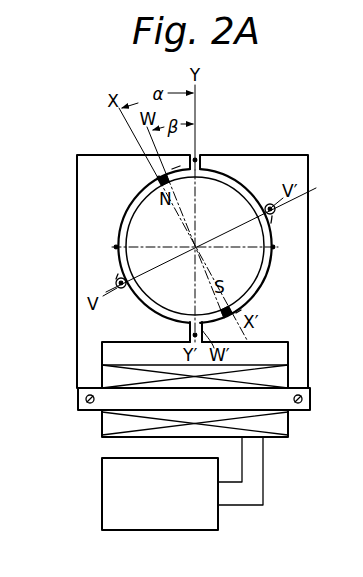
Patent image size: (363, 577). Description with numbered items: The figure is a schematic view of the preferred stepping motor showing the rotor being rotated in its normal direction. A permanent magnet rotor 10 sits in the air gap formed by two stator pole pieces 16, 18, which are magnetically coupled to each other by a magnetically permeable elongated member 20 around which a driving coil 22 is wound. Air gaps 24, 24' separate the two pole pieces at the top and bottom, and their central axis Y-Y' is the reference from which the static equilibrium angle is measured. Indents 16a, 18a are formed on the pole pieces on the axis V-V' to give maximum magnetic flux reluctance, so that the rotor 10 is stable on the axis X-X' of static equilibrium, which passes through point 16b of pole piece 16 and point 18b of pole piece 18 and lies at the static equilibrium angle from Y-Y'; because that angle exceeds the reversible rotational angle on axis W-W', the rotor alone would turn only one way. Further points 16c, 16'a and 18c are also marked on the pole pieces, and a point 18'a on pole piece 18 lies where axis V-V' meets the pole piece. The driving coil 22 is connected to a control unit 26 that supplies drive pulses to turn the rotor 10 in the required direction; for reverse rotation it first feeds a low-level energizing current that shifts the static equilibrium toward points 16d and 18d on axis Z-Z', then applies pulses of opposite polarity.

The permanent magnet rotor 10 is at (268, 266).
The stator pole piece 16 is at (139, 259).
The indent 16a is at (116, 288).
The stator ring portion 16'a is at (75, 264).
The static equilibrium point 16b is at (158, 178).
The stator ring portion 16c is at (172, 168).
The electromagnetically provided static equilibrium point 16d is at (115, 247).
The stator pole piece 18 is at (209, 271).
The indent 18a is at (308, 194).
The point on axis V-V' 18'a is at (313, 220).
The static equilibrium point 18b is at (242, 310).
The housing portion 18c is at (243, 338).
The electromagnetically provided static equilibrium point 18d is at (274, 247).
The magnetically permeable elongated member 20 is at (310, 399).
The driving coil 22 is at (287, 426).
The air gap 24 is at (216, 144).
The air gap 24' is at (165, 363).
The control unit 26 is at (102, 491).